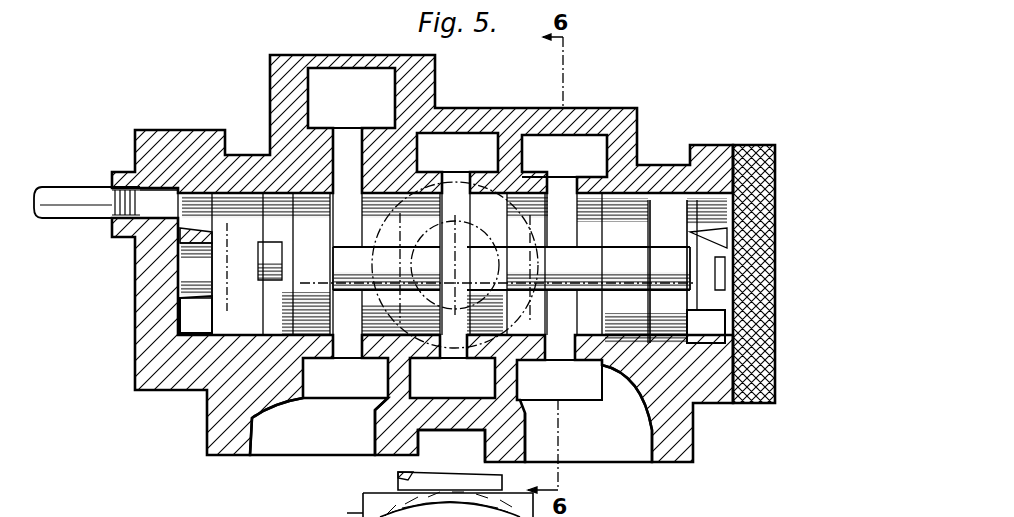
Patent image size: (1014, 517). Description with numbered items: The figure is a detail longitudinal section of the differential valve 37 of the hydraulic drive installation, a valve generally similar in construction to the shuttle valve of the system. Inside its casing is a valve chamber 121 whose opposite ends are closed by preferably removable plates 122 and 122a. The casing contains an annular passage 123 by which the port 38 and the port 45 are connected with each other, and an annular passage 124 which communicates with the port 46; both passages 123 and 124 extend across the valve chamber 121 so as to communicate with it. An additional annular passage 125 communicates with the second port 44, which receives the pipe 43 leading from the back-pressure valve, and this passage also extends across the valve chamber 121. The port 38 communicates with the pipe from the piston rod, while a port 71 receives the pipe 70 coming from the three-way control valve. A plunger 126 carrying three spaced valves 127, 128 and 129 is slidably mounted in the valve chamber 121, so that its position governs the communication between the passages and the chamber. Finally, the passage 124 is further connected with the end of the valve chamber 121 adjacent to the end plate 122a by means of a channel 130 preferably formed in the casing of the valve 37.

The differential valve 37 is at (181, 399).
The port 38 is at (351, 98).
The pipe 43 is at (471, 478).
The second port 44 is at (478, 185).
The port 45 is at (317, 437).
The port 46 is at (620, 450).
The pipe 70 is at (58, 207).
The port 71 is at (162, 205).
The valve chamber 121 is at (190, 315).
The end plate 122 is at (133, 377).
The end plate 122a is at (755, 383).
The annular passage 123 is at (300, 142).
The annular passage 124 is at (593, 153).
The annular passage 125 is at (457, 152).
The plunger 126 is at (345, 378).
The valve 127 is at (293, 308).
The valve 128 is at (647, 352).
The valve 129 is at (452, 378).
The channel 130 is at (559, 380).